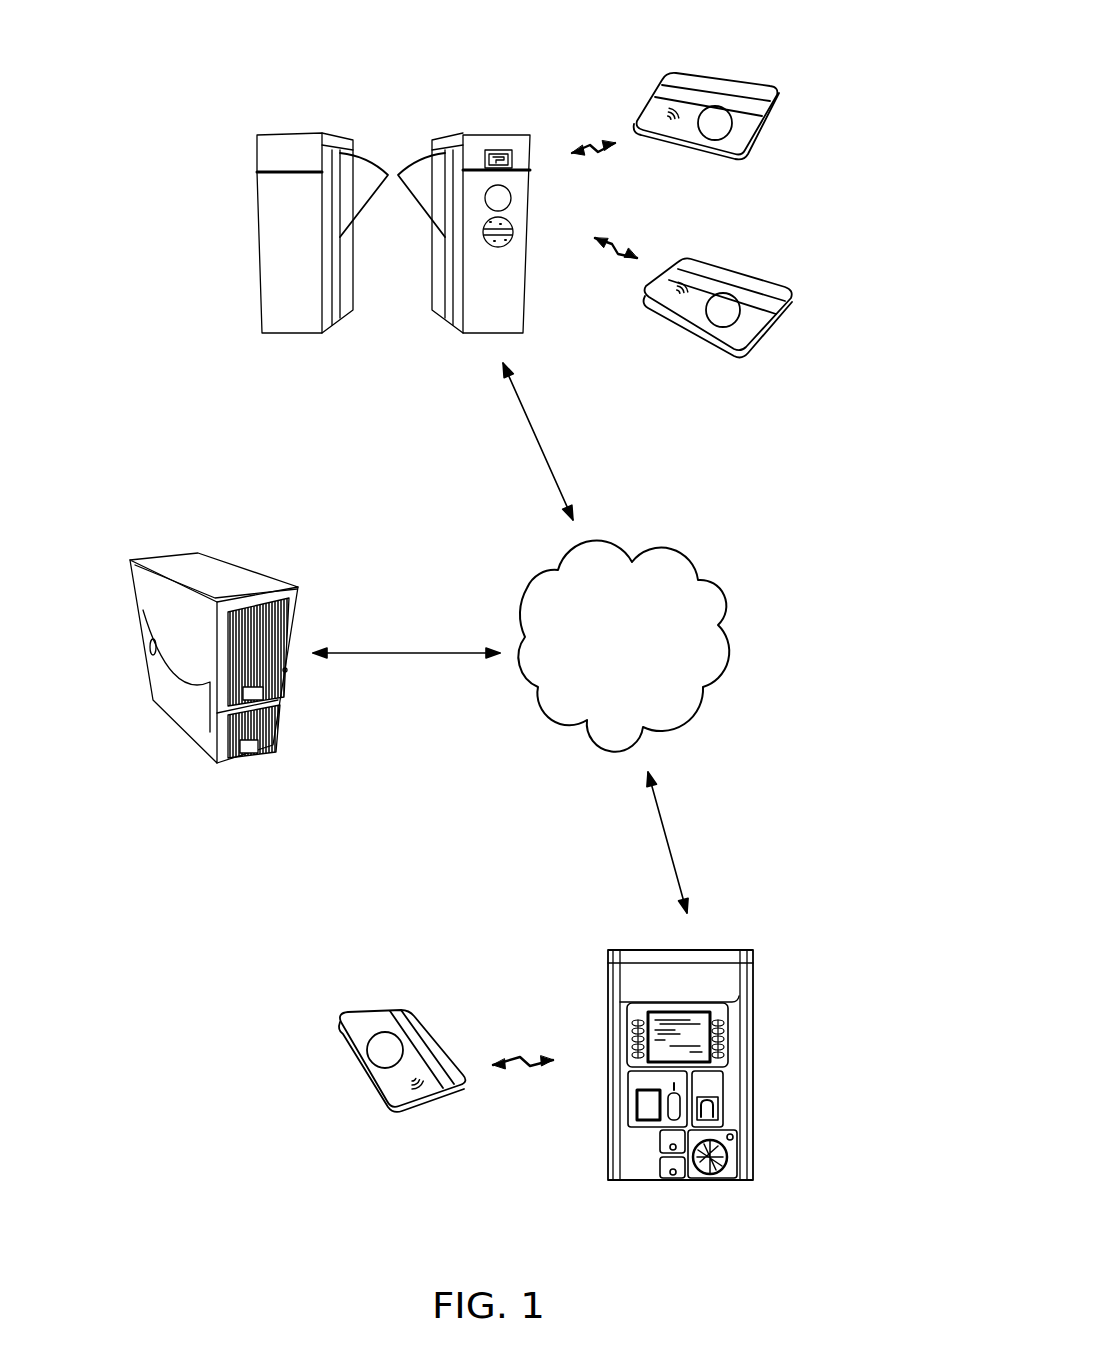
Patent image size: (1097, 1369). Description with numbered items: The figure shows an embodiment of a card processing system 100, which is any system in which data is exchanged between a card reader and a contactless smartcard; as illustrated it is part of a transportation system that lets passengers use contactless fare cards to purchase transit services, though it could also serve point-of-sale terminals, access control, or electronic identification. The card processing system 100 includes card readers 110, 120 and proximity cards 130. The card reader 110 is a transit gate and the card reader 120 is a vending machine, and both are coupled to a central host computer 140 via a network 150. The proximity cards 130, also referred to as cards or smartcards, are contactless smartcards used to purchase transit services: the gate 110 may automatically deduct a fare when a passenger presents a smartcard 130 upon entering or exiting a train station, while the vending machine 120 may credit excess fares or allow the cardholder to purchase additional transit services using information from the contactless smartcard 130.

The card processing system 100 is at (816, 38).
The card reader (transit gate) 110 is at (270, 133).
The card reader (vending machine) 120 is at (727, 950).
The proximity card 130 is at (713, 72).
The central host computer 140 is at (157, 557).
The network 150 is at (547, 570).